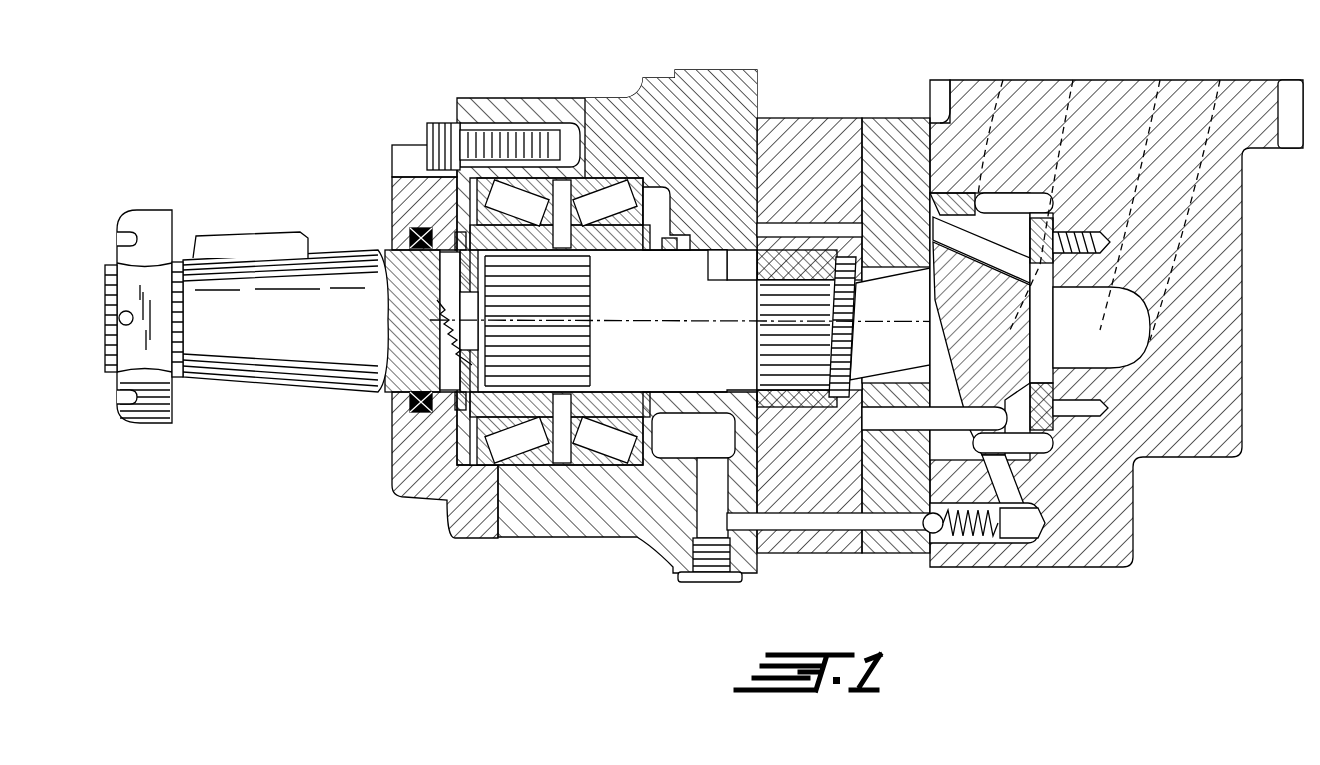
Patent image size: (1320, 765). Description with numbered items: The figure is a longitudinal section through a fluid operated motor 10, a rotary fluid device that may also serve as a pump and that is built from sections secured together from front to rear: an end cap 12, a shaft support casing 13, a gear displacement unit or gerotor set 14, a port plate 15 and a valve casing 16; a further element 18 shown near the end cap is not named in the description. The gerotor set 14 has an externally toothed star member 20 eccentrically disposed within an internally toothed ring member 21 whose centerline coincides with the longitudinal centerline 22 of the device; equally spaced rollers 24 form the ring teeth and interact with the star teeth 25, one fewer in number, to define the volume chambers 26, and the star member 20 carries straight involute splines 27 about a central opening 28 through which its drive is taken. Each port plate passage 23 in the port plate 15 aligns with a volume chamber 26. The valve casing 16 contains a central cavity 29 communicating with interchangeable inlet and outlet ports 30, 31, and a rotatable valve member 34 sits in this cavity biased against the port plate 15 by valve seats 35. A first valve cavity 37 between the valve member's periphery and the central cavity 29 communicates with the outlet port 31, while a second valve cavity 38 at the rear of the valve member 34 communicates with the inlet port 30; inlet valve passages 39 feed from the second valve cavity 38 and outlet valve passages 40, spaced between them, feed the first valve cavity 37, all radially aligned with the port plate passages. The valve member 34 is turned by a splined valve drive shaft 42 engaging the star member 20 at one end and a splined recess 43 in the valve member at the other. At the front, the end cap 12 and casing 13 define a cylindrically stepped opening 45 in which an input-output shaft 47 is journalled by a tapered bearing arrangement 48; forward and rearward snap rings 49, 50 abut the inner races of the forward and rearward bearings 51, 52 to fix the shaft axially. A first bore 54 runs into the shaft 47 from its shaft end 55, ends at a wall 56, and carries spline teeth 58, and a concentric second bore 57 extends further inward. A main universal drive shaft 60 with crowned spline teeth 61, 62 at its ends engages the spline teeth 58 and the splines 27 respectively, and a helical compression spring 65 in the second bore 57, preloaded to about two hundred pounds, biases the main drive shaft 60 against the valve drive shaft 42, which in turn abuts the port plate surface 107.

The fluid operated motor 10 is at (797, 114).
The end cap 12 is at (395, 145).
The shaft support casing 13 is at (543, 98).
The gerotor set 14 is at (835, 118).
The port plate 15 is at (880, 118).
The valve casing 16 is at (1112, 80).
The bolt 18 is at (437, 123).
The star member 20 is at (864, 416).
The ring member 21 is at (762, 128).
The longitudinal centerline 22 is at (640, 320).
The port plate passage 23 is at (918, 415).
The rollers 24 is at (810, 230).
The star teeth 25 is at (852, 265).
The volume chambers 26 is at (827, 430).
The splines 27 is at (858, 380).
The central opening 28 is at (855, 292).
The central cavity 29 is at (1085, 288).
The inlet port 30 is at (1220, 80).
The outlet port 31 is at (1070, 80).
The valve member 34 is at (982, 362).
The valve seats 35 is at (1030, 367).
The first valve cavity 37 is at (1012, 205).
The second valve cavity 38 is at (1097, 349).
The inlet valve passages 39 is at (1028, 283).
The outlet valve passages 40 is at (1003, 420).
The valve drive shaft 42 is at (893, 314).
The splined recess 43 is at (950, 285).
The cylindrically stepped opening 45 is at (470, 440).
The input-output shaft 47 is at (272, 324).
The tapered bearing arrangement 48 is at (607, 172).
The forward snap ring 49 is at (440, 268).
The rearward snap ring 50 is at (702, 413).
The forward bearing 51 is at (560, 208).
The rearward bearing 52 is at (612, 200).
The first bore 54 is at (640, 266).
The shaft end 55 is at (722, 255).
The wall 56 is at (470, 385).
The second bore 57 is at (440, 300).
The spline teeth 58 is at (580, 355).
The main universal drive shaft 60 is at (684, 315).
The crowned spline teeth 61 is at (572, 310).
The crowned spline teeth 62 is at (760, 330).
The spring 65 is at (440, 348).
The port plate surface 107 is at (862, 475).